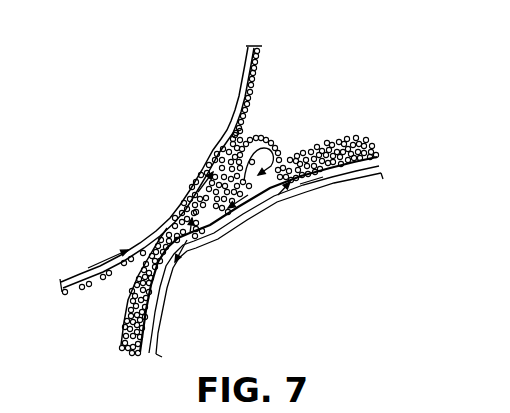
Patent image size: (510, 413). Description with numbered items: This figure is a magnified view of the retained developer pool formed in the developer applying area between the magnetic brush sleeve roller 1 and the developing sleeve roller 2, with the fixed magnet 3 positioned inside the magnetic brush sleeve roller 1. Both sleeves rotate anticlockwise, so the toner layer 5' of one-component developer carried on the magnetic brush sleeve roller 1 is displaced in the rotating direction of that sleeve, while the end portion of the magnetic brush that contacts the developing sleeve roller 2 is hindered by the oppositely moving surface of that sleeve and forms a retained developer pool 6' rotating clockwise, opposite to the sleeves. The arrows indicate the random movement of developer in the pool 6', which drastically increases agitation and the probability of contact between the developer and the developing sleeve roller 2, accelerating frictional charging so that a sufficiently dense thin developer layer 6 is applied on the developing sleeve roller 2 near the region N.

The magnetic brush sleeve roller 1 is at (372, 158).
The developing sleeve roller 2 is at (231, 119).
The fixed magnet 3 is at (175, 338).
The toner layer 5' is at (329, 143).
The thin developer layer 6 is at (233, 143).
The retained developer pool 6' is at (265, 142).
The lumen N is at (222, 265).